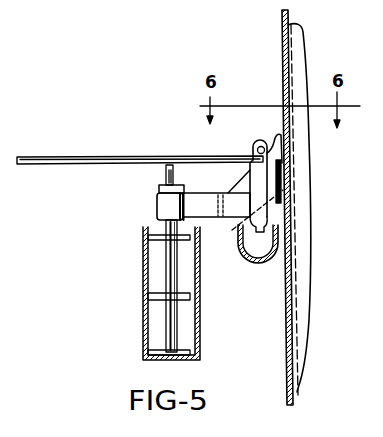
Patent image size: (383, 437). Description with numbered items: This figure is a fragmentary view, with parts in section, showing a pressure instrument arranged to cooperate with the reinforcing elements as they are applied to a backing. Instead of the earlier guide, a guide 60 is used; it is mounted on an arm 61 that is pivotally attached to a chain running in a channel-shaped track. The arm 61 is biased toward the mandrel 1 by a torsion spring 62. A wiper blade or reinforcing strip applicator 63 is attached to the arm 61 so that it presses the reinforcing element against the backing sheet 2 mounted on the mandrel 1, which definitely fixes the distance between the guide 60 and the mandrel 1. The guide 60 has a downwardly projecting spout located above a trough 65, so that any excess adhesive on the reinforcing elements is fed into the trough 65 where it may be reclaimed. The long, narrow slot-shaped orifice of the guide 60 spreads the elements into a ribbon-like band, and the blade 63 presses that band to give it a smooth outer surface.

The mandrel 1 is at (312, 262).
The backing sheet 2 is at (287, 351).
The guide 60 is at (250, 170).
The arm 61 is at (207, 217).
The torsion spring 62 is at (158, 190).
The wiper blade or reinforcing strip applicator 63 is at (275, 142).
The trough 65 is at (247, 263).